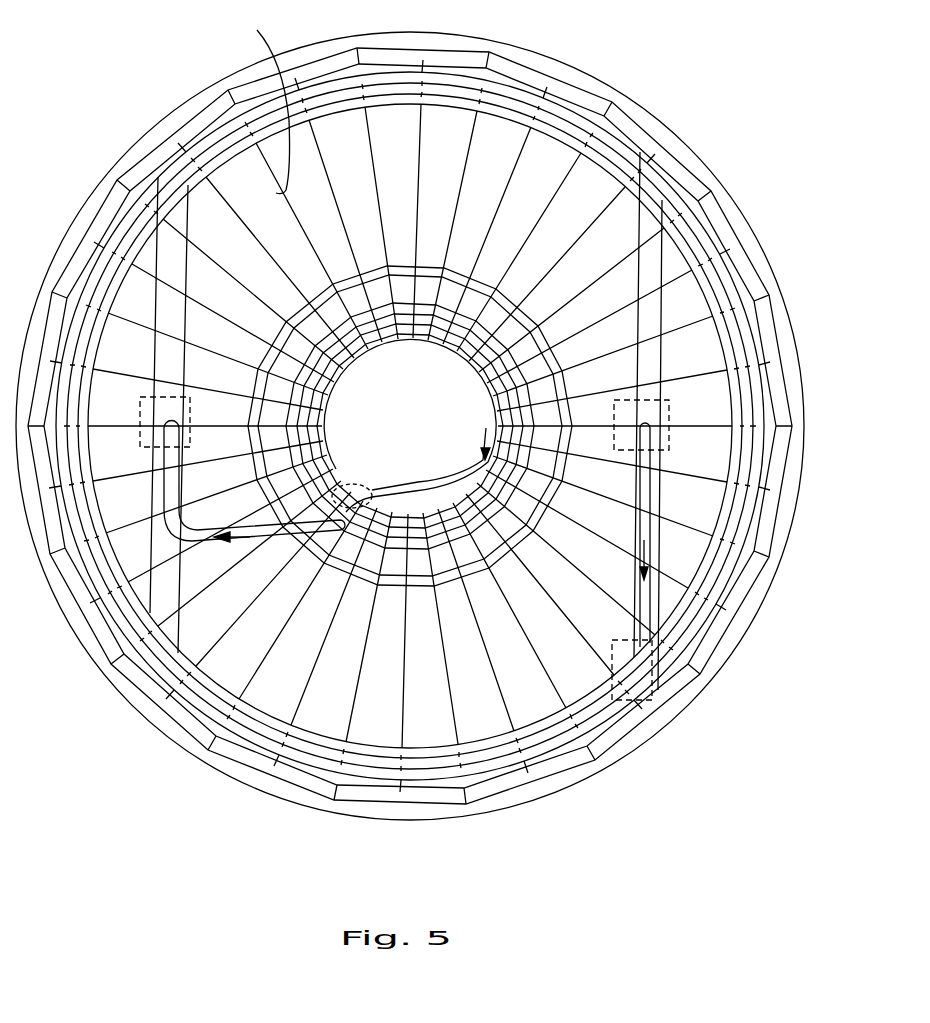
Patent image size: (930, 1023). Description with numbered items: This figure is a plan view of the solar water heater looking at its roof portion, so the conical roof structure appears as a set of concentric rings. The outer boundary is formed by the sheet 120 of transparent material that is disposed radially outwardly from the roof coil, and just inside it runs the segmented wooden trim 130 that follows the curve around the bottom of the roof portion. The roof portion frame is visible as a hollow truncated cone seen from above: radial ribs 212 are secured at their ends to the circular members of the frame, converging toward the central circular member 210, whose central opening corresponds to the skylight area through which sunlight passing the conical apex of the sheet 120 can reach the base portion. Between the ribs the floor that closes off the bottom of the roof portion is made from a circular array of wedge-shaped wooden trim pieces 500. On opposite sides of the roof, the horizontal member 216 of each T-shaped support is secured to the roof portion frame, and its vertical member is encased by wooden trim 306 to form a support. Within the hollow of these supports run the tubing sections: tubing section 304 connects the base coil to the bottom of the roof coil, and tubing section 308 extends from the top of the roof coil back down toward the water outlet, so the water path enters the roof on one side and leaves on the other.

The sheet of transparent material 120 is at (670, 146).
The wooden trim 130 is at (722, 244).
The ribs 212 is at (346, 152).
The horizontal member 216 is at (176, 262).
The circular member 210 is at (333, 418).
The wooden trim 306 is at (176, 400).
The tubing section 308 is at (175, 490).
The tubing section 304 is at (654, 498).
The wedge-shaped wooden trim pieces 500 is at (480, 170).